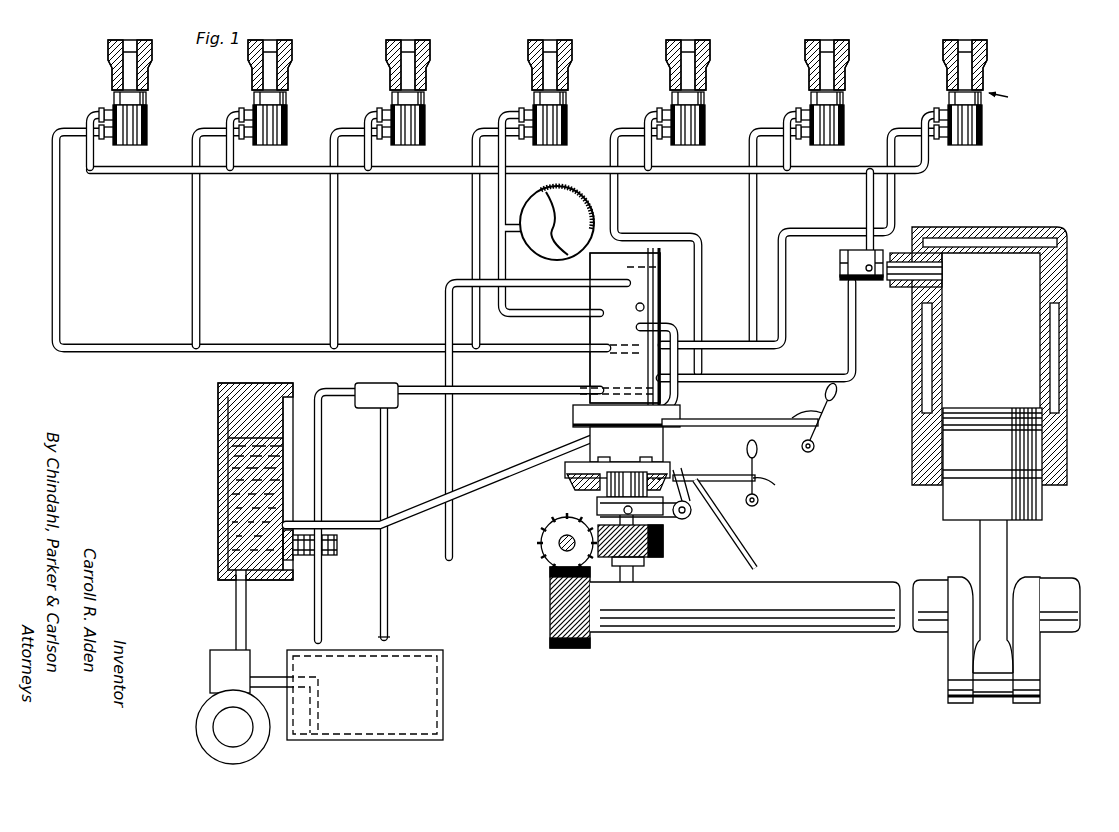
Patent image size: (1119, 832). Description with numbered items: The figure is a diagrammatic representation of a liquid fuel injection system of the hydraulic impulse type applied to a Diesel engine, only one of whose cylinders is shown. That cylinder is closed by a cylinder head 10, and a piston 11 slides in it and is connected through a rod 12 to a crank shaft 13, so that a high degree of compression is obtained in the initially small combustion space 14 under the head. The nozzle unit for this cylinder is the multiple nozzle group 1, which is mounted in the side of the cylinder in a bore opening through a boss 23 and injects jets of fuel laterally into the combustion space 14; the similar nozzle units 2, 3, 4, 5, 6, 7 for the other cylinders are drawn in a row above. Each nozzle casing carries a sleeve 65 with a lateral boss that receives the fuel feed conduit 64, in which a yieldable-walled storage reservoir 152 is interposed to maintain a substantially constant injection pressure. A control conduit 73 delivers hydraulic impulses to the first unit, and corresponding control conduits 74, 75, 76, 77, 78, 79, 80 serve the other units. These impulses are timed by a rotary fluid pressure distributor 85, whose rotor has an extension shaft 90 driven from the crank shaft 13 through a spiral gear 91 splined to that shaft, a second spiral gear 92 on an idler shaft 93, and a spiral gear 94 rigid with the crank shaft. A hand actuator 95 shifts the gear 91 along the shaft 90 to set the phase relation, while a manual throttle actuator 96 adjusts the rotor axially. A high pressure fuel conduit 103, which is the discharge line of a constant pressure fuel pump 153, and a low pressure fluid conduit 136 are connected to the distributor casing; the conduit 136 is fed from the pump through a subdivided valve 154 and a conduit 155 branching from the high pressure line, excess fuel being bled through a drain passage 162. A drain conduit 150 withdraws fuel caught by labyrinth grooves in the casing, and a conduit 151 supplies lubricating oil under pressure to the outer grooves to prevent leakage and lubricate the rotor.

The multiple nozzle group 1 is at (886, 291).
The nozzle unit 2 is at (152, 94).
The nozzle unit 3 is at (292, 94).
The nozzle unit 4 is at (430, 94).
The nozzle unit 5 is at (572, 94).
The nozzle unit 6 is at (710, 93).
The nozzle unit 7 is at (849, 93).
The cylinder head 10 is at (1067, 240).
The piston 11 is at (1030, 502).
The rod 12 is at (1005, 553).
The crank shaft 13 is at (868, 633).
The combustion space 14 is at (998, 262).
The boss 23 is at (904, 253).
The fuel feed conduit 64 is at (300, 174).
The sleeve 65 is at (148, 130).
The control conduit 73 is at (856, 363).
The control conduit 74 is at (61, 219).
The control conduit 75 is at (210, 224).
The control conduit 76 is at (334, 248).
The control conduit 77 is at (471, 208).
The control conduit 78 is at (617, 205).
The control conduit 79 is at (748, 196).
The control conduit 80 is at (842, 230).
The fluid pressure distributor 85 is at (665, 257).
The extension shaft 90 is at (640, 566).
The spiral gear 91 is at (665, 546).
The second spiral gear 92 is at (549, 521).
The idler shaft 93 is at (558, 540).
The spiral gear 94 is at (550, 620).
The hand actuator 95 is at (772, 497).
The manual throttle actuator 96 is at (822, 438).
The high pressure fuel conduit 103 is at (488, 478).
The low pressure fluid conduit 136 is at (547, 390).
The drain conduit 150 is at (452, 552).
The conduit 151 is at (746, 552).
The storage reservoir 152 is at (594, 228).
The constant pressure fuel pump 153 is at (259, 748).
The subdivided valve 154 is at (360, 383).
The conduit 155 is at (322, 460).
The drain passage 162 is at (386, 580).